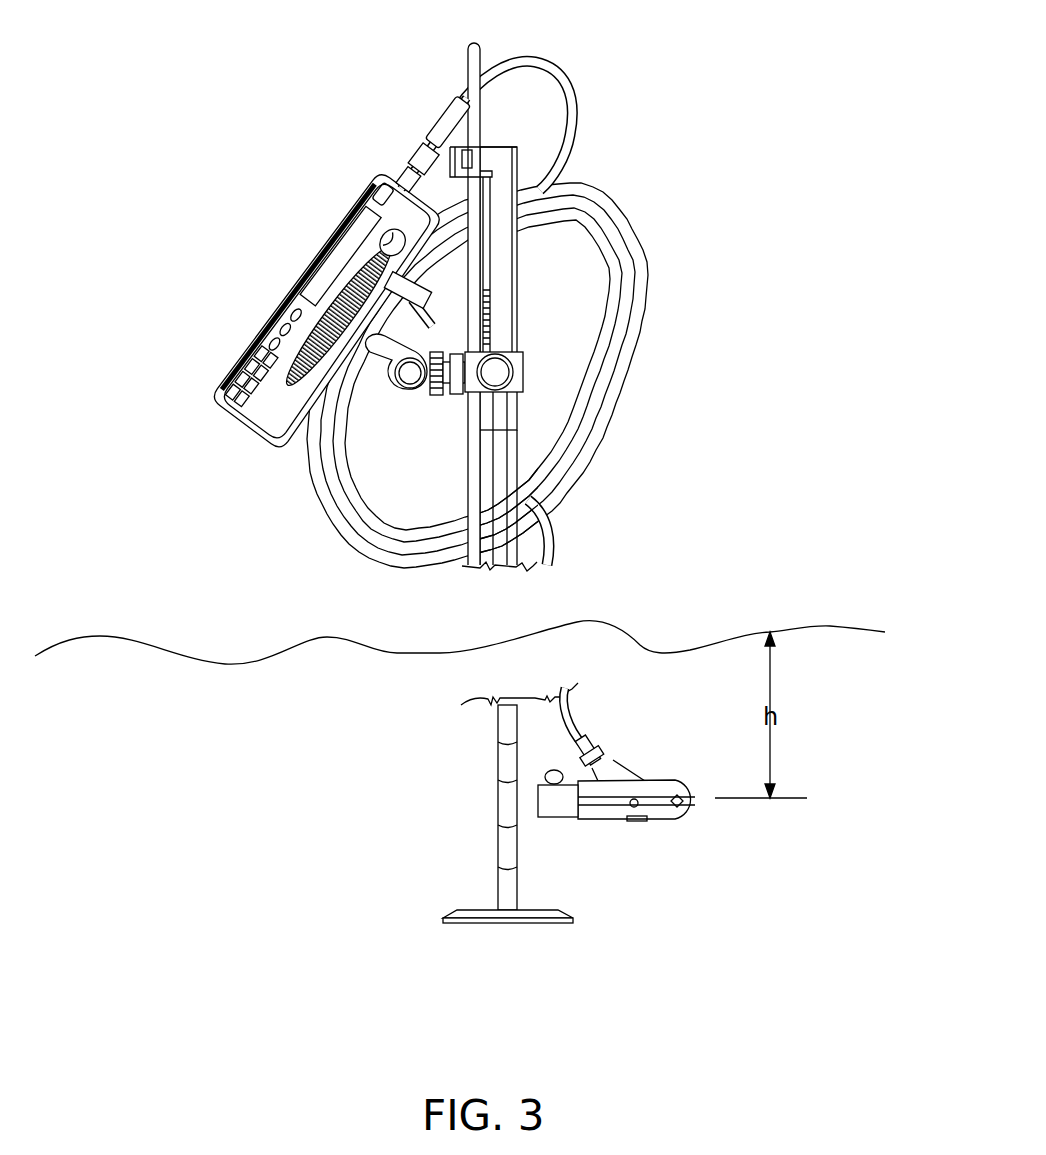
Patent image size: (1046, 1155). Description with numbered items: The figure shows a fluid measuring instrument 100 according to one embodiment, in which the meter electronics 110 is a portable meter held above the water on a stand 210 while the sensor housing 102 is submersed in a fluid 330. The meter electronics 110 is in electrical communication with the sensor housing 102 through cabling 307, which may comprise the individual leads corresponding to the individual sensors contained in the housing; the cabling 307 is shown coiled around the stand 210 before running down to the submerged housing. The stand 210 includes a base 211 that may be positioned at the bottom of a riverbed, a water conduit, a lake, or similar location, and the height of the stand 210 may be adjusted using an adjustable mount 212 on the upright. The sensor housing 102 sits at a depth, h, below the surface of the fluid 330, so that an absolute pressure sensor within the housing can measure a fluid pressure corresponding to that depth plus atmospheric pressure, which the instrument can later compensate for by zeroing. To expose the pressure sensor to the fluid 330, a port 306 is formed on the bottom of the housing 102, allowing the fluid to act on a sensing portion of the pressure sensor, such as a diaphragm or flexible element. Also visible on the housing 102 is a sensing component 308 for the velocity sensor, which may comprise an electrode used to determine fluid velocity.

The fluid measuring instrument 100 is at (615, 108).
The meter electronics 110 is at (263, 326).
The stand 210 is at (515, 267).
The adjustable mount 212 is at (522, 370).
The cabling 307 is at (575, 452).
The fluid 330 is at (615, 625).
The sensor housing 102 is at (663, 780).
The sensing component 308 is at (680, 804).
The port 306 is at (637, 830).
The base 211 is at (472, 905).